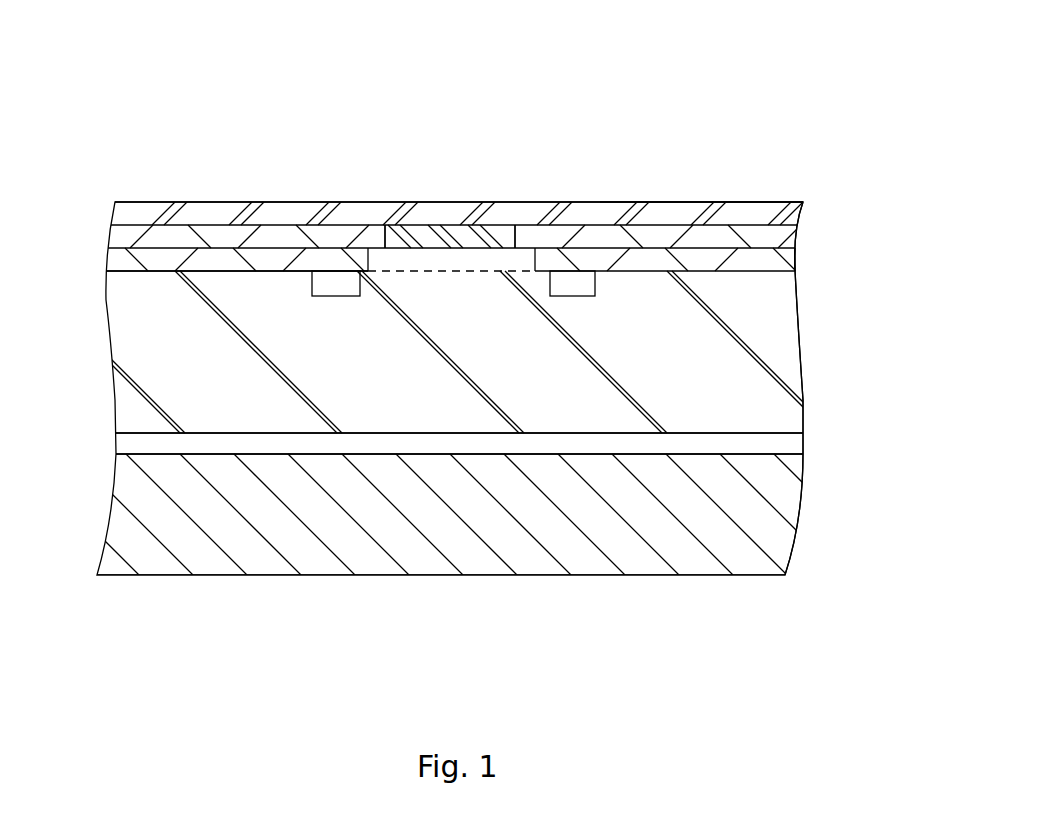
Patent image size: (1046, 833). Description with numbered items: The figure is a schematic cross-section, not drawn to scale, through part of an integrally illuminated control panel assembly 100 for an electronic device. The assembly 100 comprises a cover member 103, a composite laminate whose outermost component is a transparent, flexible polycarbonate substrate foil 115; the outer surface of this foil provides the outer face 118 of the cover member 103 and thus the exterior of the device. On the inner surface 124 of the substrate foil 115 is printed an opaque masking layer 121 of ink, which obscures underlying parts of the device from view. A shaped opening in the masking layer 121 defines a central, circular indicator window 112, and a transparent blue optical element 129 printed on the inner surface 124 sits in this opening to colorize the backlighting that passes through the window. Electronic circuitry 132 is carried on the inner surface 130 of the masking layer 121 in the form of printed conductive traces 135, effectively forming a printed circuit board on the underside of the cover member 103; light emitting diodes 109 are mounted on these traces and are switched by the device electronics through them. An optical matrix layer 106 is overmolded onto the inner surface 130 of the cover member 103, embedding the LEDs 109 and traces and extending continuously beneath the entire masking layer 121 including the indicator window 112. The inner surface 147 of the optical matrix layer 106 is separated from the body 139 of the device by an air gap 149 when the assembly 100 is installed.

The control panel assembly 100 is at (648, 40).
The cover member 103 is at (808, 232).
The optical matrix layer 106 is at (783, 403).
The light emitting diodes 109 is at (330, 285).
The indicator window 112 is at (521, 237).
The substrate foil 115 is at (752, 209).
The outer face 118 is at (337, 197).
The masking layer 121 is at (267, 208).
The inner surface of the substrate foil 124 is at (163, 233).
The optical element 129 is at (428, 237).
The inner surface of the masking layer 130 is at (285, 257).
The electronic circuitry 132 is at (202, 277).
The inner face / conductive traces 135 is at (790, 261).
The body 139 is at (762, 567).
The inner surface of the optical matrix layer 147 is at (523, 427).
The air gap 149 is at (150, 461).